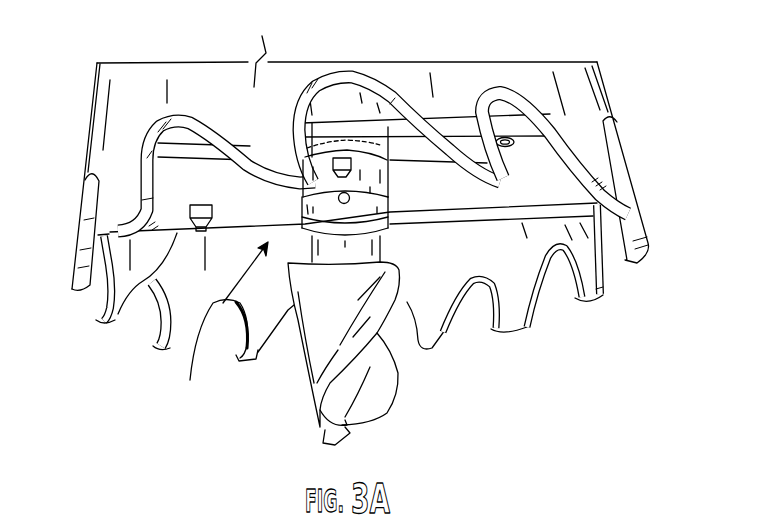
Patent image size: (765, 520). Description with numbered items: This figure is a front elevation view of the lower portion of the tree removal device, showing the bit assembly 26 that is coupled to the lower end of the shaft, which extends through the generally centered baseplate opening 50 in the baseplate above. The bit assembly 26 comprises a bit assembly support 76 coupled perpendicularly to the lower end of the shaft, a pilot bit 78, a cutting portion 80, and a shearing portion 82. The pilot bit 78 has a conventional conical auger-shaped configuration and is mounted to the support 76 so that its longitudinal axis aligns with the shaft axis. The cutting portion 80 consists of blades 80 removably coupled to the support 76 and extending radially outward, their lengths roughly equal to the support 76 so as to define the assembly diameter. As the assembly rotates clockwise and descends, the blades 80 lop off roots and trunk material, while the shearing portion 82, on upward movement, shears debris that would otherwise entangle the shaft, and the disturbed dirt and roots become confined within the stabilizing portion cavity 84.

The bit assembly 26 is at (404, 238).
The baseplate opening 50 is at (378, 158).
The bit assembly support 76 is at (176, 153).
The pilot bit 78 is at (342, 395).
The cutting portion 80 is at (98, 307).
The shearing portion 82 is at (170, 142).
The cavity 84 is at (190, 378).